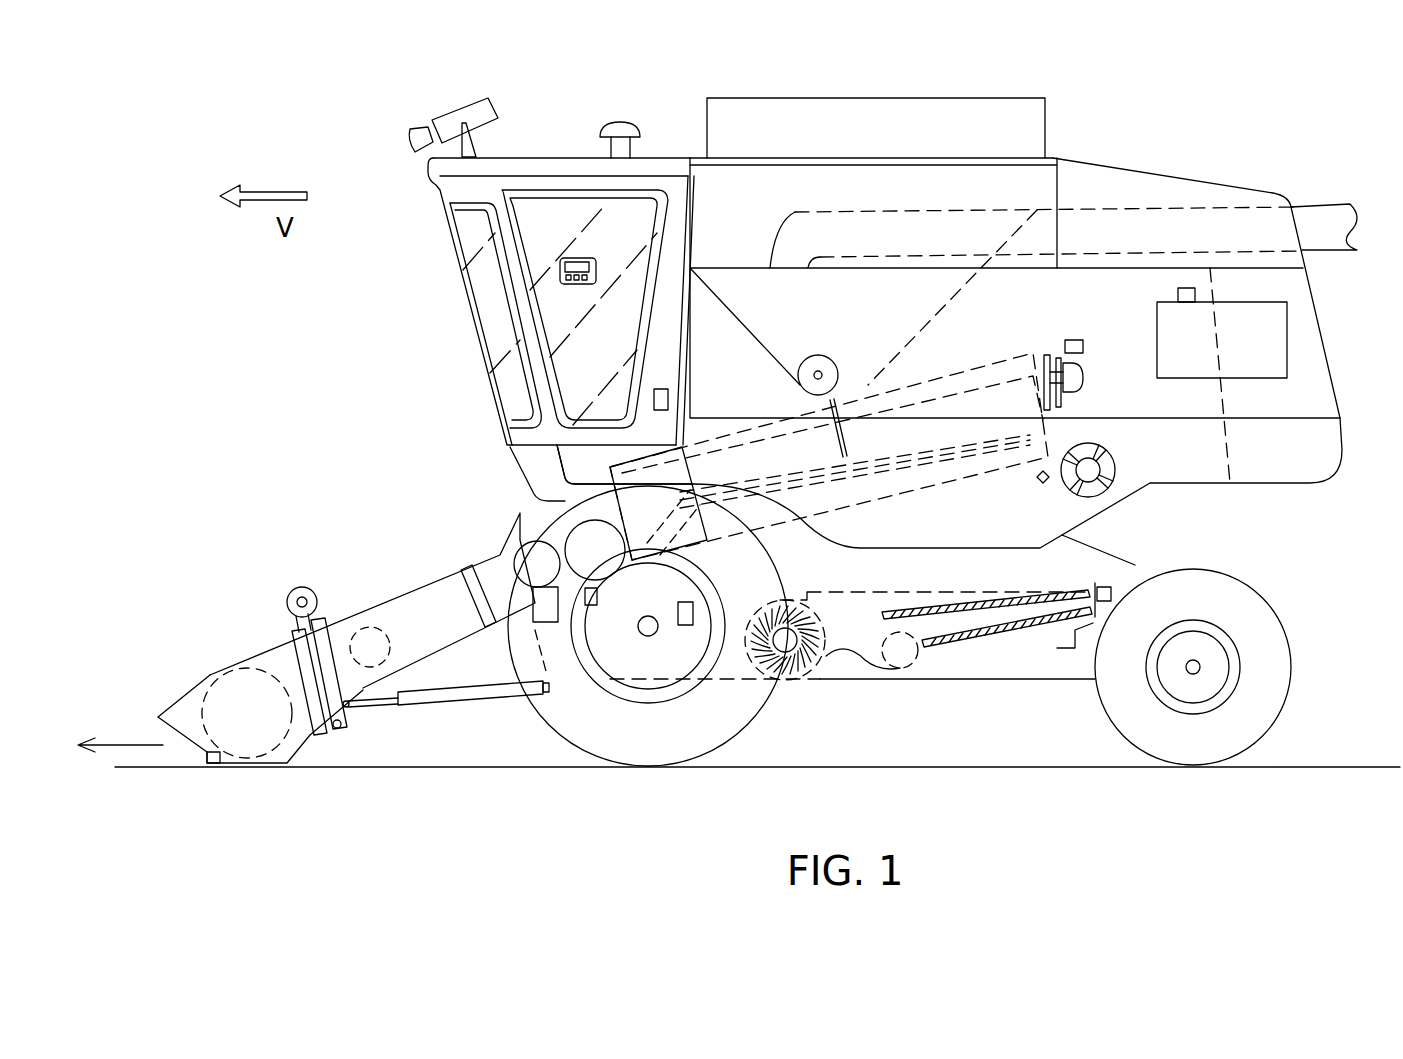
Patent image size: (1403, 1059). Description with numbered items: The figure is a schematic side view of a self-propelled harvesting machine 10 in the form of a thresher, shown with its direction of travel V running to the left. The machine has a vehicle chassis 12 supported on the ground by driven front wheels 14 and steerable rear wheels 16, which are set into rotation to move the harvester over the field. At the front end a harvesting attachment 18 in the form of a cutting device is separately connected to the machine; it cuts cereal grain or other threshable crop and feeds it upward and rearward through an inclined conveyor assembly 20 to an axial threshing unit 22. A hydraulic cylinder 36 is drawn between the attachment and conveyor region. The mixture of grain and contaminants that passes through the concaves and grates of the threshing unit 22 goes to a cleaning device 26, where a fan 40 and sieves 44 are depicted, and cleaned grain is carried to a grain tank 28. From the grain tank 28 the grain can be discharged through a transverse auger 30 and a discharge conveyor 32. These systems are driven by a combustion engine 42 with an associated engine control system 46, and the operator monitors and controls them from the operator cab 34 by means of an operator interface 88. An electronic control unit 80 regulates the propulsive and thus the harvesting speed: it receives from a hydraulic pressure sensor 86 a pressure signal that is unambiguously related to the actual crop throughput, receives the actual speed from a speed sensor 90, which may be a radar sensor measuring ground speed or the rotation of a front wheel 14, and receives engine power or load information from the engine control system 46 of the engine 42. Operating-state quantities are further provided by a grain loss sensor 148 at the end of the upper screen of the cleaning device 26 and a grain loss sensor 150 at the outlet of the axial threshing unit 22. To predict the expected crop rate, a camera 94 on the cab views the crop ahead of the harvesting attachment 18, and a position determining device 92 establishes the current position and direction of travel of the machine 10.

The harvesting machine 10 is at (1196, 113).
The vehicle chassis 12 is at (953, 680).
The front wheels 14 is at (708, 750).
The rear wheels 16 is at (1238, 720).
The harvesting attachment 18 is at (232, 652).
The inclined conveyor assembly 20 is at (457, 570).
The axial threshing unit 22 is at (933, 372).
The cleaning device 26 is at (978, 650).
The grain tank 28 is at (708, 233).
The transverse auger 30 is at (823, 372).
The discharge conveyor 32 is at (1253, 229).
The operator cab 34 is at (556, 157).
The hydraulic cylinder 36 is at (430, 700).
The cleaning fan 40 is at (820, 640).
The combustion engine 42 is at (1275, 345).
The sieves 44 is at (1007, 612).
The engine control system 46 is at (1195, 295).
The electronic control unit 80 is at (668, 398).
The hydraulic pressure sensor 86 is at (1083, 345).
The operator interface 88 is at (597, 270).
The speed sensor 90 is at (686, 625).
The position determining device 92 is at (622, 130).
The camera 94 is at (478, 98).
The grain loss sensor 148 is at (1104, 587).
The grain loss sensor 150 is at (1045, 483).